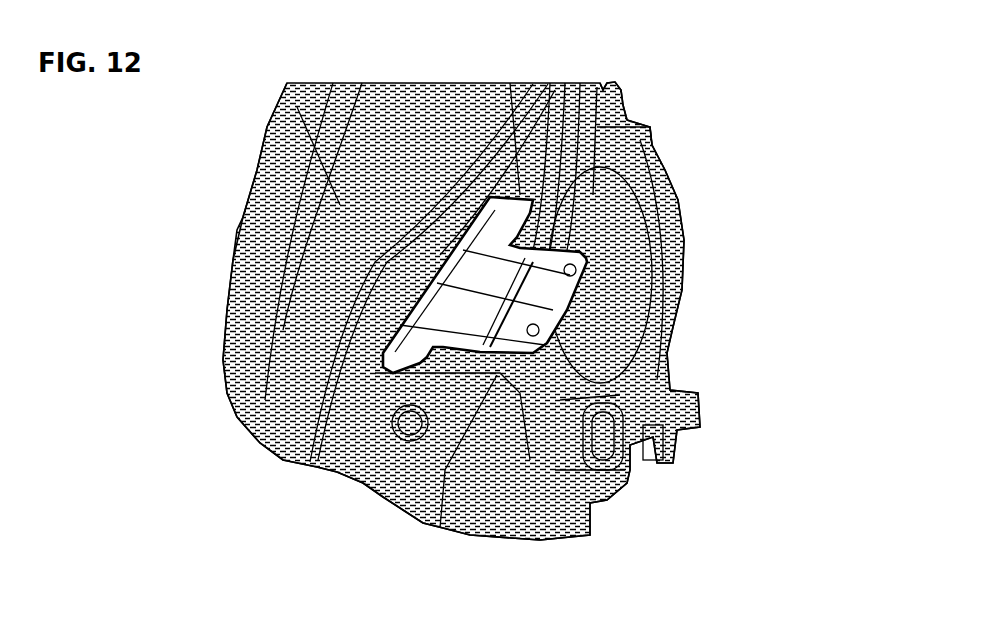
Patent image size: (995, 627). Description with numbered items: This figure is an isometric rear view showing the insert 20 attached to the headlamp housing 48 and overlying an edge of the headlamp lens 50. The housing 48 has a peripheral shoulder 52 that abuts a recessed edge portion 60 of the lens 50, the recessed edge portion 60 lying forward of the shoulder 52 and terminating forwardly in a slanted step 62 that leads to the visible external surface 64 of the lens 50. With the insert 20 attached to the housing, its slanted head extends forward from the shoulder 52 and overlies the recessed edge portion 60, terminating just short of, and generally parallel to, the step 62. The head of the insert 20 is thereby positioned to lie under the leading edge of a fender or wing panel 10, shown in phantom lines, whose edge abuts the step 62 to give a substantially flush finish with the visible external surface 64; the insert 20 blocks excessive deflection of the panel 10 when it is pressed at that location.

The fender or wing panel 10 is at (317, 557).
The insert 20 is at (590, 245).
The headlamp housing 48 is at (623, 153).
The lens 50 is at (272, 452).
The peripheral shoulder 52 is at (565, 86).
The recessed edge portion 60 is at (393, 480).
The step 62 is at (327, 463).
The visible external surface 64 is at (228, 375).